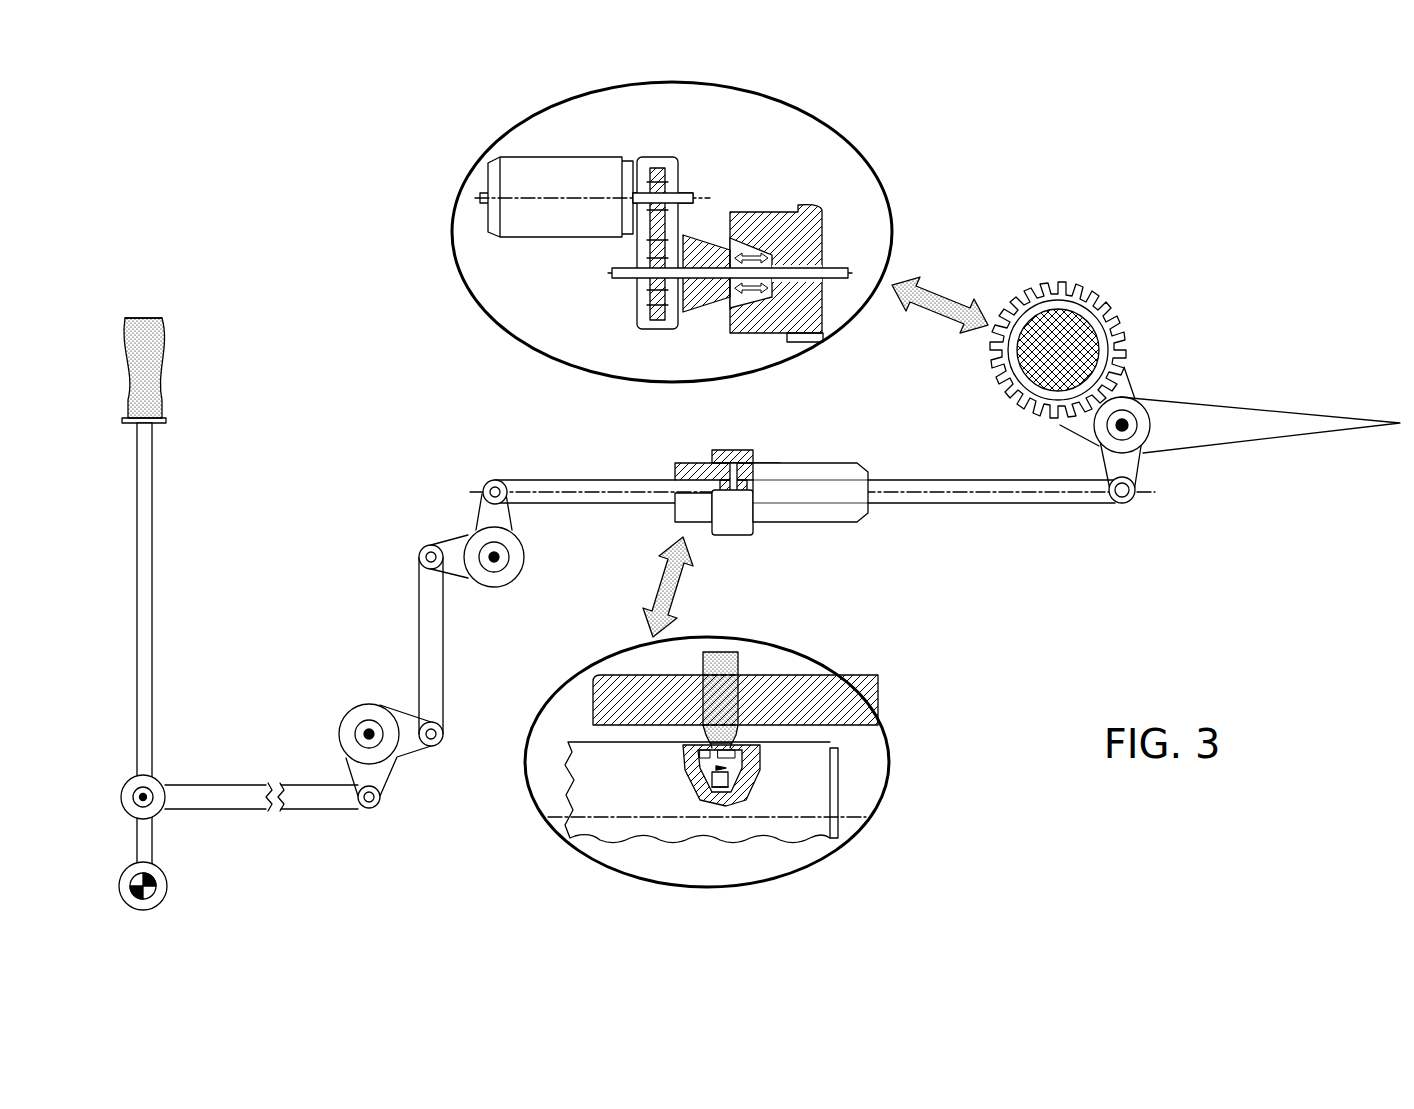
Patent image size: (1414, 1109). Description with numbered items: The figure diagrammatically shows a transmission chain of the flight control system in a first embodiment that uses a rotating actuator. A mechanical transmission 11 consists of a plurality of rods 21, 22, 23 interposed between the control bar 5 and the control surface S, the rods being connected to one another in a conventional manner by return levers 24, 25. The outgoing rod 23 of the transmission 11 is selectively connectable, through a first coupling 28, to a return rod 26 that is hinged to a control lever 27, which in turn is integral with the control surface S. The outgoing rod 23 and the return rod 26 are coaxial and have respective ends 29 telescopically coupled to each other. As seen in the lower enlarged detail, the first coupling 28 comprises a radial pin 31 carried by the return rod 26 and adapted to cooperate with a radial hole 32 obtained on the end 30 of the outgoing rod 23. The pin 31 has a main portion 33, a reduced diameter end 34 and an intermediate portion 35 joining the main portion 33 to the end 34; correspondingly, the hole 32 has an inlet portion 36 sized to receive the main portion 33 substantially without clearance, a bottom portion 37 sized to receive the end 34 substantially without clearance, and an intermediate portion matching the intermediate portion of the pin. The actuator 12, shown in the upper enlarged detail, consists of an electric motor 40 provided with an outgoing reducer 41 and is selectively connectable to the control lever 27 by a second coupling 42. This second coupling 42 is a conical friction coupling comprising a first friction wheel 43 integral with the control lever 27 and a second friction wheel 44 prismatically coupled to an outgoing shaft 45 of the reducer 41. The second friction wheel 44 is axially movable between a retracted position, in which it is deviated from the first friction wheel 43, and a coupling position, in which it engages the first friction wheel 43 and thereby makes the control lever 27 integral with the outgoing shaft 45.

The control bar 5 is at (146, 505).
The mechanical transmission 11 is at (409, 772).
The actuator 12 is at (686, 150).
The rod 21 is at (318, 800).
The rod 22 is at (437, 613).
The outgoing rod 23 is at (617, 485).
The return lever 24 is at (401, 702).
The return lever 25 is at (458, 521).
The return rod 26 is at (977, 483).
The control lever 27 is at (1148, 459).
The first coupling 28 is at (781, 457).
The end 29 is at (821, 828).
The end of the outgoing rod 30 is at (808, 681).
The radial pin 31 is at (724, 649).
The radial hole 32 is at (710, 771).
The main portion 33 is at (713, 660).
The reduced diameter end 34 is at (749, 768).
The intermediate portion 35 is at (712, 742).
The inlet portion 36 is at (700, 741).
The bottom portion 37 is at (722, 784).
The electric motor 40 is at (538, 223).
The outgoing reducer 41 is at (633, 326).
The second coupling 42 is at (720, 207).
The first friction wheel 43 is at (763, 217).
The second friction wheel 44 is at (697, 311).
The outgoing shaft 45 is at (834, 271).
The control surface S is at (1278, 426).